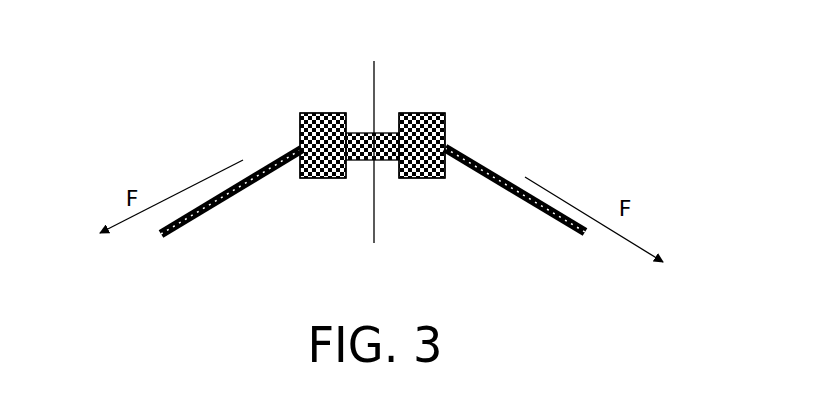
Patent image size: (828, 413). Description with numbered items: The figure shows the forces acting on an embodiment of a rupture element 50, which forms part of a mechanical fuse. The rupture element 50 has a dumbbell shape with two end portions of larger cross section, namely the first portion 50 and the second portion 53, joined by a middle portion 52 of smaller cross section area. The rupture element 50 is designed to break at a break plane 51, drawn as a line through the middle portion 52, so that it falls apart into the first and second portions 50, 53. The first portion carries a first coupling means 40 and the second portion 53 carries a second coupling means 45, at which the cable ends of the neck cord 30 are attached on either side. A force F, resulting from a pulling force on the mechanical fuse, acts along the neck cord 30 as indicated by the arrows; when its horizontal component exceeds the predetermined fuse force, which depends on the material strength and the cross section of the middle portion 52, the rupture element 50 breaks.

The neck cord 30 is at (250, 183).
The first coupling means 40 is at (298, 145).
The second coupling means 45 is at (447, 143).
The rupture element 50 is at (325, 112).
The break plane 51 is at (377, 78).
The middle portion 52 is at (362, 163).
The second portion 53 is at (423, 178).